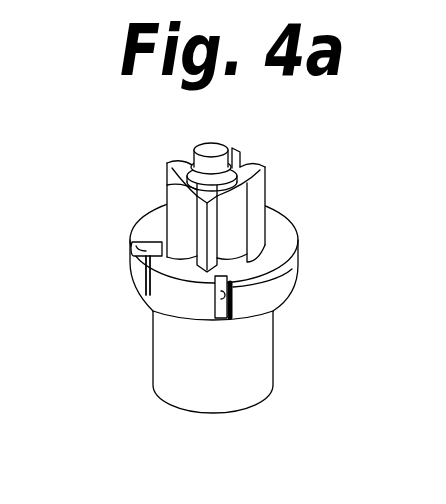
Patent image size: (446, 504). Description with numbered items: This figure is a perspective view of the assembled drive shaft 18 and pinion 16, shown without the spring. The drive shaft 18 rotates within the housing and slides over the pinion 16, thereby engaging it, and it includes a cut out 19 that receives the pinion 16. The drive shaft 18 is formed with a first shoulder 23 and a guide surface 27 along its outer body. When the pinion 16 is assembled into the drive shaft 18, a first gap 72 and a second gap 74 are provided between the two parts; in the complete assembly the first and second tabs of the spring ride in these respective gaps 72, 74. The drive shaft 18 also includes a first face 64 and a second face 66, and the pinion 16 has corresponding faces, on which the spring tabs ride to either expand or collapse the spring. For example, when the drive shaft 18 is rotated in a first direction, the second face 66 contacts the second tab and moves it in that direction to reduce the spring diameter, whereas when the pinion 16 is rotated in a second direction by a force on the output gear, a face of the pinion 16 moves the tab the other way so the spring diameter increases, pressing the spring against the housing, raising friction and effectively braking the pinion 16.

The pinion 16 is at (266, 190).
The drive shaft 18 is at (273, 375).
The cut out 19 is at (129, 263).
The first gap 72 is at (129, 263).
The first shoulder 23 is at (217, 331).
The guide surface 27 is at (302, 296).
The first face 64 is at (133, 252).
The second face 66 is at (228, 316).
The second gap 74 is at (223, 333).